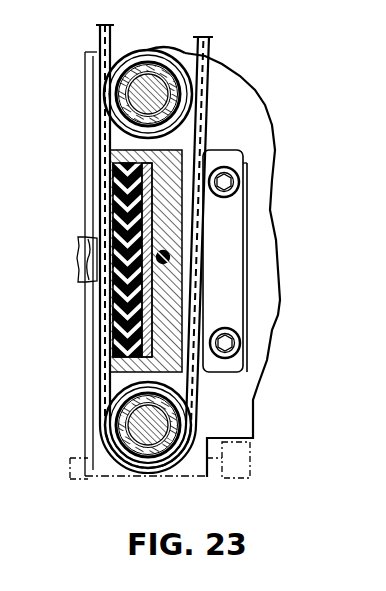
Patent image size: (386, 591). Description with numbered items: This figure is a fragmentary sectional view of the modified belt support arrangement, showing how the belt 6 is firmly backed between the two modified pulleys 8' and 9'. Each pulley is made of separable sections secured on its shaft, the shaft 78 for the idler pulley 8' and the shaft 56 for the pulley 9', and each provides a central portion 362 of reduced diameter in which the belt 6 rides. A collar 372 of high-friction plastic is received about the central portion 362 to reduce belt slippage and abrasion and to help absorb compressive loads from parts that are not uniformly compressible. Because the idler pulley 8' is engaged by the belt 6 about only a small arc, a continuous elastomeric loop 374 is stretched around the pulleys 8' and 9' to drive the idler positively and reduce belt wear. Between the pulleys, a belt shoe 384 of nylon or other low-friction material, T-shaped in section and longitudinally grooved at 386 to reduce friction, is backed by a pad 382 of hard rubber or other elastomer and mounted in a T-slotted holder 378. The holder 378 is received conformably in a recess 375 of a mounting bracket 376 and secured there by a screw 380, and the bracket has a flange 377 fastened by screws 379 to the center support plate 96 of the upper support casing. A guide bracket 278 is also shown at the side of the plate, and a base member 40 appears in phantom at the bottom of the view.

The belt 6 is at (100, 37).
The idler pulley 8' is at (166, 39).
The shaft 78 is at (112, 105).
The central portion 362 is at (176, 98).
The collar 372 is at (194, 136).
The mounting bracket 376 is at (110, 152).
The T-slotted holder 378 is at (153, 221).
The screws 379 is at (247, 163).
The flange 377 is at (247, 196).
The screw 380 is at (170, 257).
The bracket 278 is at (77, 258).
The pad 382 is at (152, 298).
The belt shoe 384 is at (112, 305).
The groove 386 is at (112, 334).
The recess 375 is at (160, 318).
The pulley 9' is at (120, 420).
The elastomeric loop 374 is at (195, 396).
The center support plate 96 is at (253, 412).
The base member 40 is at (250, 473).
The shaft 56 is at (171, 468).